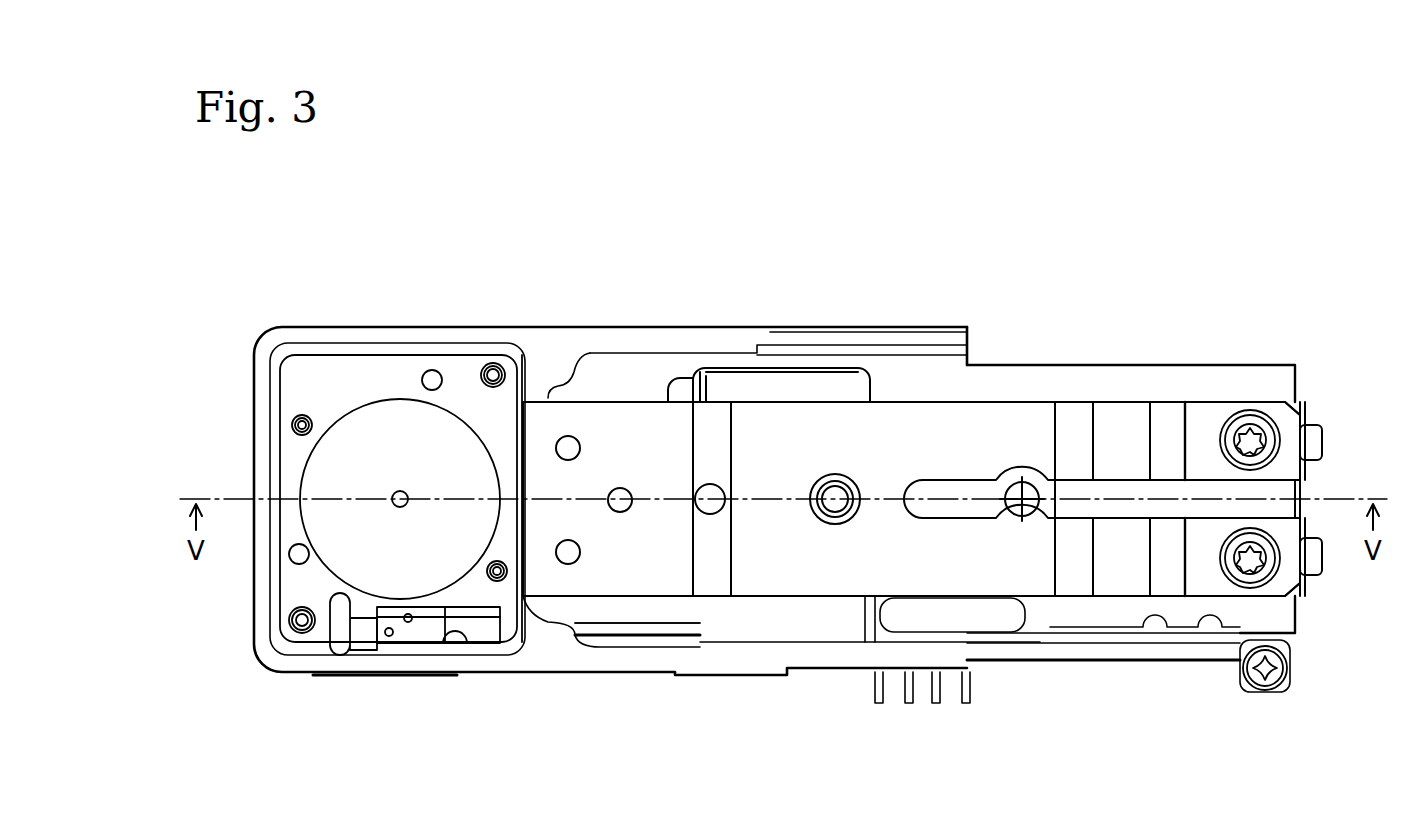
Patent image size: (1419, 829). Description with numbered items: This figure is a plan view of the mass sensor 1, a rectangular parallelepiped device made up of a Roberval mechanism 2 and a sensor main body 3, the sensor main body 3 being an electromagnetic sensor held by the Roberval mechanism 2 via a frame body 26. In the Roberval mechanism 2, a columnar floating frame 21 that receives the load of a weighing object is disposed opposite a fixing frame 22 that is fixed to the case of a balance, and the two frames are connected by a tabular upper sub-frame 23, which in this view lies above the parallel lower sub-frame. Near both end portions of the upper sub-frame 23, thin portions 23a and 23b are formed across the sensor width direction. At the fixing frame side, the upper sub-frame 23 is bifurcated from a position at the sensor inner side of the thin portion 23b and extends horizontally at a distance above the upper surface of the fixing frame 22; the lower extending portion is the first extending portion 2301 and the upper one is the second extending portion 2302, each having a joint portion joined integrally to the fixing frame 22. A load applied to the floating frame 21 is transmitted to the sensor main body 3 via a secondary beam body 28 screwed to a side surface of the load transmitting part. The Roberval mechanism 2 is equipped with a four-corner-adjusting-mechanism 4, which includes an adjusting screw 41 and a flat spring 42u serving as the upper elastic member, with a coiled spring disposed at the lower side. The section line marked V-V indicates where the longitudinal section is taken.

The mass sensor 1 is at (258, 290).
The Roberval mechanism 2 is at (550, 392).
The sensor main body 3 is at (345, 472).
The four-corner-adjusting-mechanism 4 is at (1305, 372).
The floating frame 21 is at (610, 427).
The fixing frame 22 is at (1283, 492).
The upper sub-frame 23 is at (880, 450).
The thin portion 23a is at (713, 423).
The thin portion 23b is at (1073, 425).
The first extending portion 2301 is at (1120, 575).
The second extending portion 2302 is at (1120, 425).
The frame body 26 is at (280, 655).
The secondary beam body 28 is at (633, 625).
The adjusting screw 41 is at (1252, 440).
The flat spring 42u is at (1284, 420).